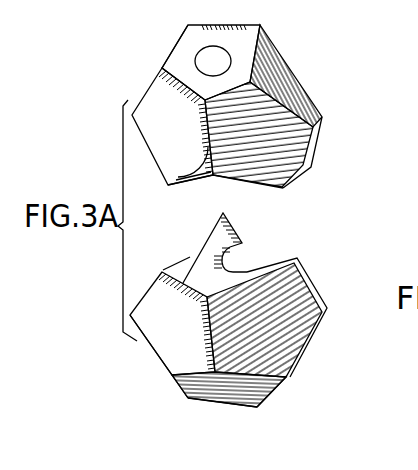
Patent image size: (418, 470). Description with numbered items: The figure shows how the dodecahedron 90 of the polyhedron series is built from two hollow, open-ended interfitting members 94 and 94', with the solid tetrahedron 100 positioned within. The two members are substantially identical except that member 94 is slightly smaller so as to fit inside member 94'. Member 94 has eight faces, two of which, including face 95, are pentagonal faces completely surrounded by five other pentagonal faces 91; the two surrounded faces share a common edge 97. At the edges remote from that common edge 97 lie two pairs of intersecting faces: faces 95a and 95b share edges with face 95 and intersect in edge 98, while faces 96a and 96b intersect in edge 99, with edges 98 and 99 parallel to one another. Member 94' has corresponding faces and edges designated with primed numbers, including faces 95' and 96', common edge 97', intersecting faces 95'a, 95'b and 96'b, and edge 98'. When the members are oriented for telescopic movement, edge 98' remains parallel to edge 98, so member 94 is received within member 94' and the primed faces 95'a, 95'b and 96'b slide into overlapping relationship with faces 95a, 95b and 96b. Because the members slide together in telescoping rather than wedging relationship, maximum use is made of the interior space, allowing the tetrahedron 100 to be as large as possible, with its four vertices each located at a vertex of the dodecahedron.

The dodecahedron 90 is at (335, 79).
The common edge of member 94′ 97' is at (203, 52).
The pentagonal face of member 94′ 95' is at (142, 46).
The pentagonal face of member 94′ 96' is at (245, 38).
The interfitting member 94' is at (294, 69).
The intersecting face of member 94′ 95'a is at (172, 126).
The edge of member 94′ 98' is at (184, 193).
The intersecting face of member 94′ 95'b is at (273, 147).
The intersecting face of member 94′ 96'b is at (344, 152).
The intersecting face 95a is at (165, 323).
The intersecting face 96a is at (185, 272).
The tetrahedron 100 is at (228, 232).
The edge 99 is at (247, 270).
The intersecting face 95b is at (254, 333).
The intersecting face 96b is at (303, 284).
The common edge 97 is at (229, 417).
The edge 98 is at (146, 367).
The pentagonal faces 91 is at (170, 380).
The pentagonal face 95 is at (222, 419).
The interfitting member 94 is at (289, 404).